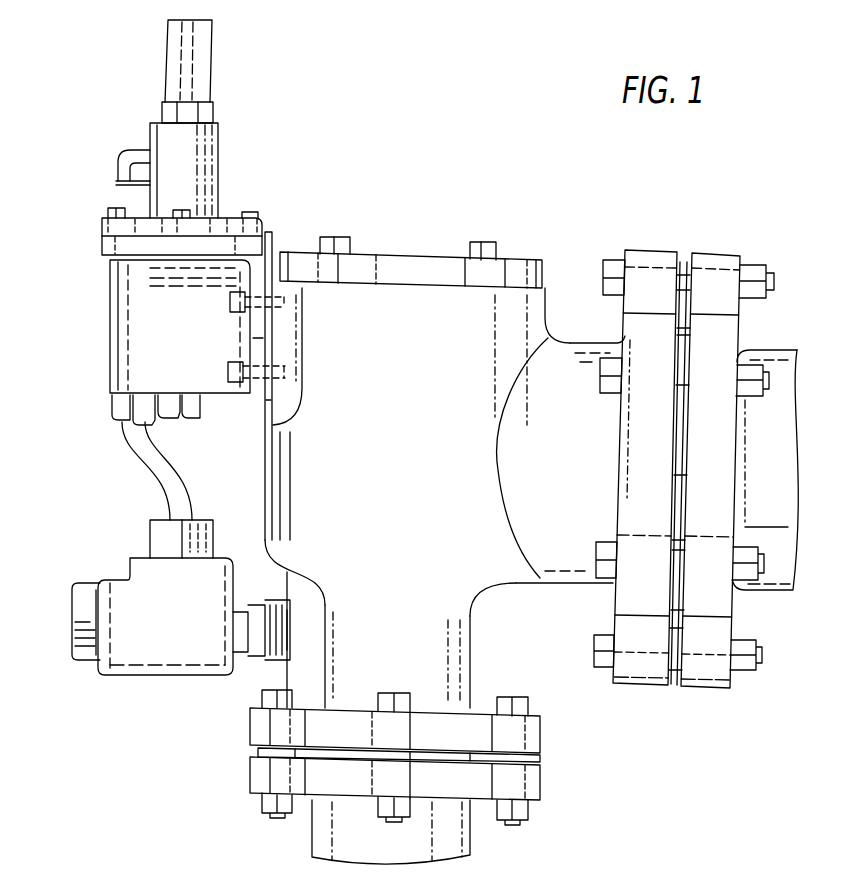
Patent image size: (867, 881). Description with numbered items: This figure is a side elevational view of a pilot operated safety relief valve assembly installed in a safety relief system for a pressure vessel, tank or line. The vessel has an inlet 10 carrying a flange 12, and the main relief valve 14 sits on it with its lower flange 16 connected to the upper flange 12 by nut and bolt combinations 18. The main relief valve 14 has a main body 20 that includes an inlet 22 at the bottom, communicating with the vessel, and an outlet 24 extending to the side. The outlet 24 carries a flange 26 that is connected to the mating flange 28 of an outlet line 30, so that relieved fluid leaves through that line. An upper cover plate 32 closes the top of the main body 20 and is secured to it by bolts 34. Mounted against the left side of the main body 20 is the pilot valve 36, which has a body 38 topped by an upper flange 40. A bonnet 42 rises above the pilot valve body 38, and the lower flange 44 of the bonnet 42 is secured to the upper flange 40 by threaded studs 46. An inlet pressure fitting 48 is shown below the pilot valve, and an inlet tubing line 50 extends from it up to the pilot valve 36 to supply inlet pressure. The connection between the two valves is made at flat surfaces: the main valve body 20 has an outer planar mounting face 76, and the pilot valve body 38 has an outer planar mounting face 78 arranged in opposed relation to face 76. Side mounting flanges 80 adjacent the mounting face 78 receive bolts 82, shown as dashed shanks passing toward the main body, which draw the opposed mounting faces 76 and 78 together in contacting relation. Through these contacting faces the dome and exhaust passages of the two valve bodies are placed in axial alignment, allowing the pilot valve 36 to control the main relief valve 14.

The inlet 10 is at (320, 843).
The flange 12 is at (250, 776).
The main relief valve 14 is at (455, 248).
The lower flange 16 is at (530, 735).
The nut and bolt combinations 18 is at (400, 695).
The main body 20 is at (398, 449).
The inlet 22 is at (473, 655).
The outlet 24 is at (569, 580).
The flange 26 is at (652, 262).
The flange 28 is at (714, 266).
The outlet line 30 is at (780, 355).
The upper cover plate 32 is at (378, 265).
The bolts 34 is at (338, 240).
The pilot valve 36 is at (154, 222).
The body 38 is at (135, 323).
The upper flange 40 is at (137, 256).
The bonnet 42 is at (210, 152).
The lower flange 44 is at (218, 228).
The threaded studs 46 is at (180, 210).
The inlet pressure fitting 48 is at (120, 665).
The inlet tubing line 50 is at (152, 476).
The outer planar mounting face 76 is at (265, 384).
The outer planar mounting face 78 is at (273, 346).
The side mounting flanges 80 is at (256, 327).
The bolts 82 is at (228, 373).